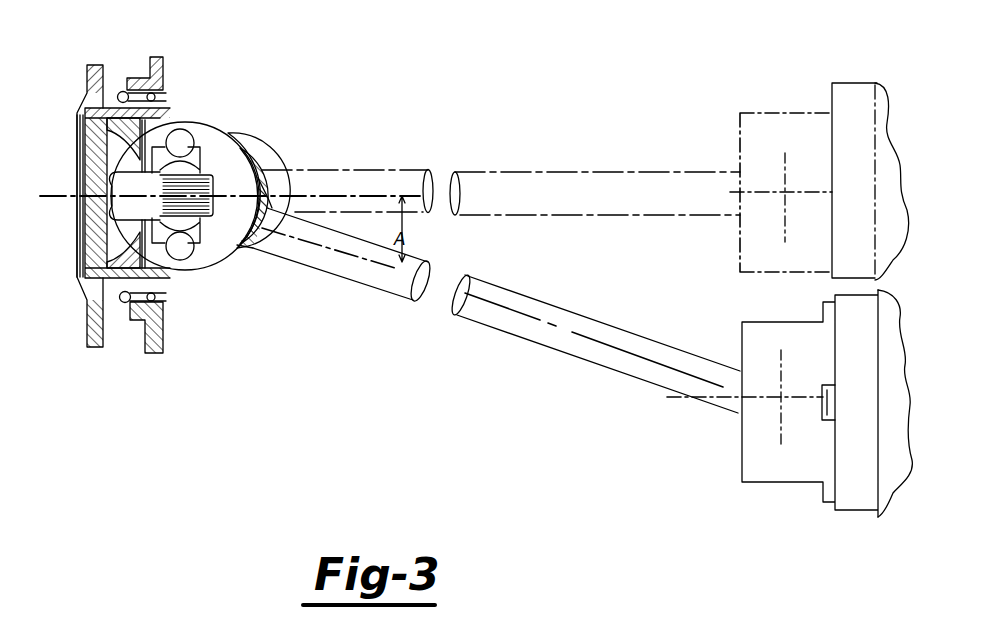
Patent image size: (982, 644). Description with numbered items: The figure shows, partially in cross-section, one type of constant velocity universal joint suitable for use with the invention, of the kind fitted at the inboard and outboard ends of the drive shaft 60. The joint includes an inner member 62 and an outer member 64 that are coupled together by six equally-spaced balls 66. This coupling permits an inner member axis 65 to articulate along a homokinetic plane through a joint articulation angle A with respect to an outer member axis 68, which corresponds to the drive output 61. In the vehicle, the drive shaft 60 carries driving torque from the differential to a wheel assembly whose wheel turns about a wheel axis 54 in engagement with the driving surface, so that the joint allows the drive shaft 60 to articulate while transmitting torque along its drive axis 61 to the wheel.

The wheel axis 54 is at (56, 193).
The drive shaft 60 is at (523, 338).
The drive axis 61 is at (597, 340).
The inner member 62 is at (218, 187).
The outer member 64 is at (222, 135).
The inner member axis 65 is at (76, 200).
The balls 66 is at (195, 270).
The outer member axis 68 is at (313, 243).